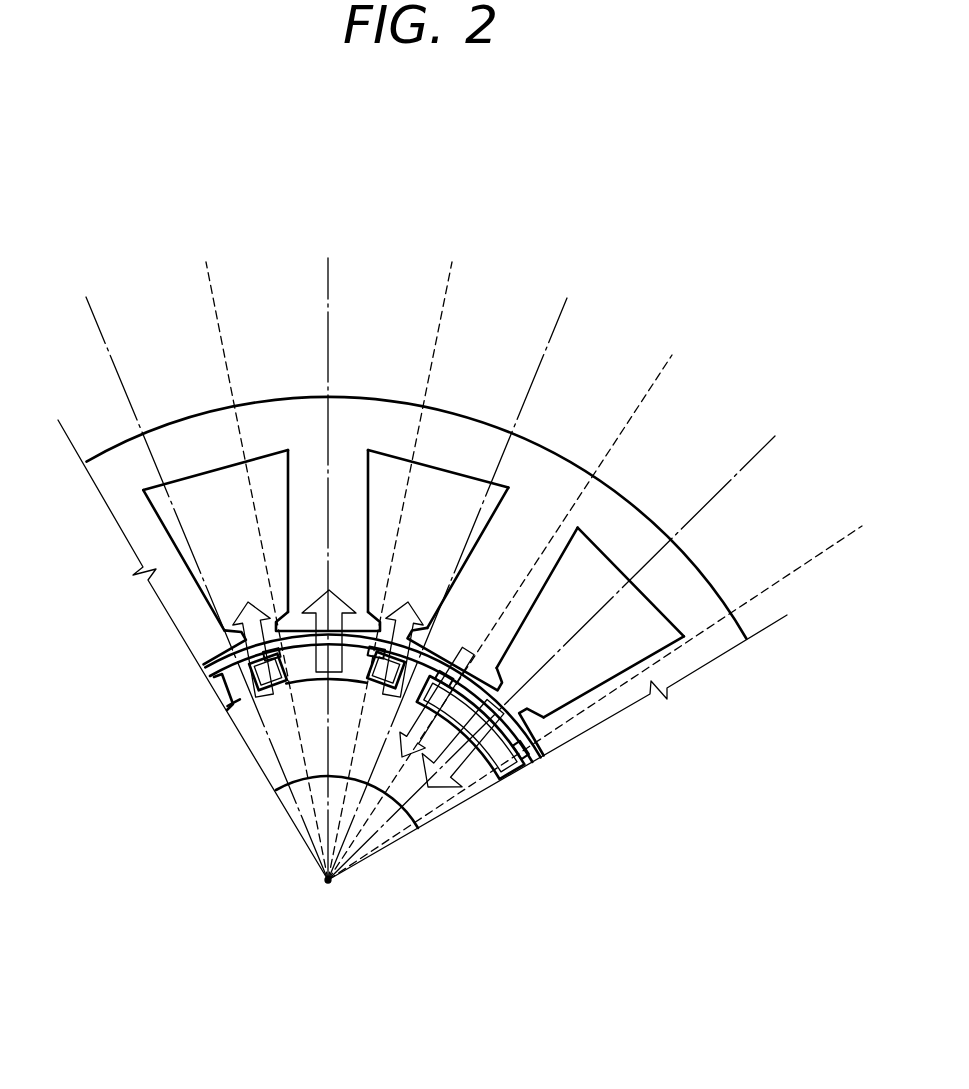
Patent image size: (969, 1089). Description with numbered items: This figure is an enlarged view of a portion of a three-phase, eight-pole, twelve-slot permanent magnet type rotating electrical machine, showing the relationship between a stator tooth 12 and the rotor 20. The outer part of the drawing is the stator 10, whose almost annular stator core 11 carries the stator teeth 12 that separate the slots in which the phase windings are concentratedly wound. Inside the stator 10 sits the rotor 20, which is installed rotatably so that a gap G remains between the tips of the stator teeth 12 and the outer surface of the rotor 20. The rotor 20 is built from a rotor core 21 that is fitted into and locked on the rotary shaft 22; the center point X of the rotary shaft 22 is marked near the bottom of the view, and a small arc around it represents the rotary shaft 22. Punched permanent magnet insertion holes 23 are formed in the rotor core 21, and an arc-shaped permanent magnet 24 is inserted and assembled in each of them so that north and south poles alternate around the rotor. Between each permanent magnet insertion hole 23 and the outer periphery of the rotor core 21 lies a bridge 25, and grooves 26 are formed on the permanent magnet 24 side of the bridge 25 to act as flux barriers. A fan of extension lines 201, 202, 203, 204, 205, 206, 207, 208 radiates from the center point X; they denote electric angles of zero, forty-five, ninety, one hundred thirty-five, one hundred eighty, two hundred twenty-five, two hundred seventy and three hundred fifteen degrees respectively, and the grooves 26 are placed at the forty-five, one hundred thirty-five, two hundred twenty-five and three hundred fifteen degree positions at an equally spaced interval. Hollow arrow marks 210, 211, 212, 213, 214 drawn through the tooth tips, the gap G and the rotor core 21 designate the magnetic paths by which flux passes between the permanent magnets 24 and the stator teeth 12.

The stator 10 is at (177, 421).
The stator core 11 is at (367, 398).
The stator tooth 12 is at (307, 533).
The rotor 20 is at (500, 695).
The rotor core 21 is at (233, 705).
The rotary shaft 22 is at (394, 836).
The permanent magnet insertion hole 23 is at (333, 683).
The permanent magnet 24 is at (298, 670).
The bridge 25 is at (520, 748).
The groove 26 is at (557, 745).
The extension line 201 is at (198, 577).
The extension line 202 is at (256, 559).
The extension line 203 is at (328, 555).
The extension line 204 is at (400, 559).
The extension line 205 is at (462, 575).
The extension line 206 is at (520, 605).
The extension line 207 is at (572, 645).
The extension line 208 is at (614, 694).
The arrow mark 210 is at (240, 618).
The arrow mark 211 is at (246, 598).
The arrow mark 212 is at (412, 604).
The arrow mark 213 is at (447, 792).
The arrow mark 214 is at (498, 785).
The gap G is at (530, 700).
The center point X is at (328, 882).